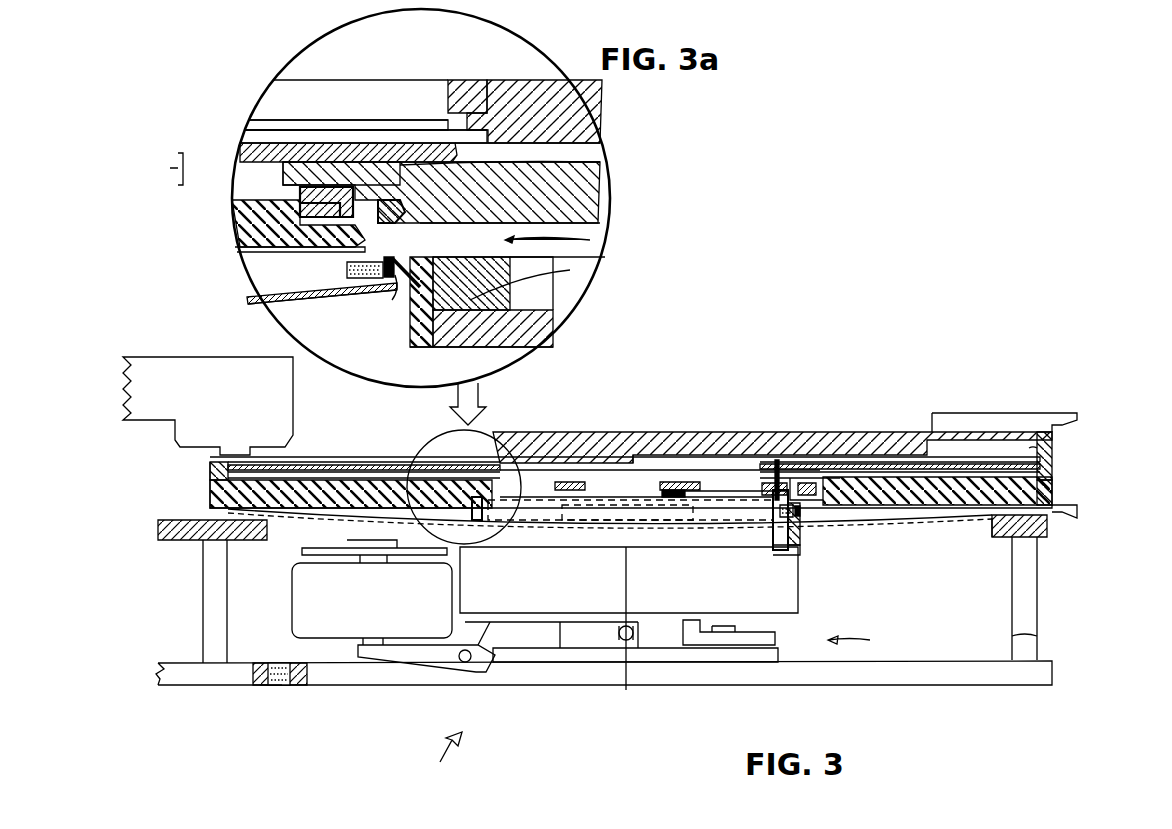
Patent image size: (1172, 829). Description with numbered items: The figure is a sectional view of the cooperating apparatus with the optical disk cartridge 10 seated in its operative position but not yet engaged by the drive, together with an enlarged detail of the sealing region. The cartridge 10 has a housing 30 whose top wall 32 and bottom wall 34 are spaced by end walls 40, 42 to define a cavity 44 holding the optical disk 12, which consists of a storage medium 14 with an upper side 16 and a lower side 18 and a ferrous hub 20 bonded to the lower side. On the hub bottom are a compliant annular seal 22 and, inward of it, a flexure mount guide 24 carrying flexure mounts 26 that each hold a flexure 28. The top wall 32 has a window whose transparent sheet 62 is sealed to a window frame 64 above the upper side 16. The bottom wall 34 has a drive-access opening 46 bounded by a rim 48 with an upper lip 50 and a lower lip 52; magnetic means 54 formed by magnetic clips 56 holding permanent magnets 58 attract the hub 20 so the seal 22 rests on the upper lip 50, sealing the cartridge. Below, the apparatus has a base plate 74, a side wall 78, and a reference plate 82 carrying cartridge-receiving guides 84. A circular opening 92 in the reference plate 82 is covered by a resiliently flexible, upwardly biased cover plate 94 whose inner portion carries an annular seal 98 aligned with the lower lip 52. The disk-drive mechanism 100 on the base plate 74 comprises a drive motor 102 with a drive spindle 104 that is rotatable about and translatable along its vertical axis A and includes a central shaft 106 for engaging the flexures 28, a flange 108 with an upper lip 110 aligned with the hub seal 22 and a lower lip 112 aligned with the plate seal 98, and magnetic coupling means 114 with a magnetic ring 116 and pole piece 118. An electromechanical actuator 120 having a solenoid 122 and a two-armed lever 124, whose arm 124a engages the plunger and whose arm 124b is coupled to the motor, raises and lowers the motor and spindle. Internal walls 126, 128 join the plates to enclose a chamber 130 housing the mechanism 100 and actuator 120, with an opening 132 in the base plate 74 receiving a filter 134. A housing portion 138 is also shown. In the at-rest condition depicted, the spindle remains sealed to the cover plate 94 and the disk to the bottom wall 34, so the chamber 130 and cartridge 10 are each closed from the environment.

In FIG. 3, the optical disk cartridge 10 is at (198, 490).
In FIG. 3, the optical disk 12 is at (610, 458).
In FIG. 3a, the information storage medium 14 is at (415, 145).
In FIG. 3, the information storage medium 14 is at (845, 465).
In FIG. 3a, the upper side 16 is at (350, 140).
In FIG. 3, the upper side 16 is at (358, 472).
In FIG. 3, the lower side 18 is at (390, 472).
In FIG. 3a, the hub 20 is at (585, 210).
In FIG. 3, the hub 20 is at (718, 468).
In FIG. 3a, the annular seal 22 is at (596, 165).
In FIG. 3, the annular seal 22 is at (780, 478).
In FIG. 3, the flexure mount guide 24 is at (668, 485).
In FIG. 3, the flexure mounts 26 is at (678, 490).
In FIG. 3, the flexure 28 is at (575, 485).
In FIG. 3, the housing 30 is at (1035, 486).
In FIG. 3a, the top wall 32 is at (580, 125).
In FIG. 3, the top wall 32 is at (540, 440).
In FIG. 3a, the bottom wall 34 is at (240, 230).
In FIG. 3, the bottom wall 34 is at (928, 518).
In FIG. 3, the end wall 40 is at (210, 468).
In FIG. 3, the end wall 42 is at (1052, 478).
In FIG. 3, the cavity 44 is at (1052, 450).
In FIG. 3a, the drive-access opening 46 is at (592, 240).
In FIG. 3a, the rim 48 is at (385, 228).
In FIG. 3a, the upper lip 50 is at (285, 252).
In FIG. 3a, the lower lip 52 is at (300, 270).
In FIG. 3a, the magnetic means 54 is at (170, 170).
In FIG. 3, the magnetic means 54 is at (800, 483).
In FIG. 3a, the magnetic clips 56 is at (300, 200).
In FIG. 3a, the permanent magnet 58 is at (283, 170).
In FIG. 3a, the window sheet 62 is at (303, 125).
In FIG. 3, the window sheet 62 is at (295, 462).
In FIG. 3a, the window frame 64 is at (455, 80).
In FIG. 3, the base plate 74 is at (1010, 686).
In FIG. 3, the side wall 78 is at (943, 608).
In FIG. 3, the reference plate 82 is at (185, 540).
In FIG. 3, the cartridge-receiving guides 84 is at (1060, 415).
In FIG. 3, the opening 92 is at (990, 540).
In FIG. 3a, the cover plate 94 is at (320, 298).
In FIG. 3, the cover plate 94 is at (880, 520).
In FIG. 3a, the annular seal 98 is at (347, 268).
In FIG. 3, the annular seal 98 is at (793, 518).
In FIG. 3, the disk-drive mechanism 100 is at (870, 640).
In FIG. 3, the drive motor 102 is at (685, 587).
In FIG. 3a, the drive spindle 104 is at (440, 350).
In FIG. 3, the drive spindle 104 is at (477, 548).
In FIG. 3, the central shaft 106 is at (640, 521).
In FIG. 3a, the flange 108 is at (386, 258).
In FIG. 3, the flange 108 is at (800, 518).
In FIG. 3a, the upper lip 110 is at (403, 258).
In FIG. 3a, the lower lip 112 is at (395, 283).
In FIG. 3a, the magnetic coupling means 114 is at (590, 263).
In FIG. 3, the magnetic coupling means 114 is at (750, 490).
In FIG. 3a, the magnetic ring 116 is at (512, 345).
In FIG. 3, the magnetic ring 116 is at (785, 555).
In FIG. 3a, the pole piece 118 is at (480, 300).
In FIG. 3, the pole piece 118 is at (792, 545).
In FIG. 3, the electromechanical actuator 120 is at (440, 762).
In FIG. 3, the solenoid 122 is at (385, 602).
In FIG. 3, the lever 124 is at (495, 663).
In FIG. 3, the lever arm 124a is at (388, 660).
In FIG. 3, the lever arm 124b is at (640, 660).
In FIG. 3, the internal wall 126 is at (203, 600).
In FIG. 3, the internal wall 128 is at (1037, 603).
In FIG. 3, the chamber 130 is at (1038, 640).
In FIG. 3, the opening 132 is at (270, 688).
In FIG. 3, the filter 134 is at (278, 663).
In FIG. 3, the housing 138 is at (243, 409).
In FIG. 3, the vertical axis A is at (638, 665).